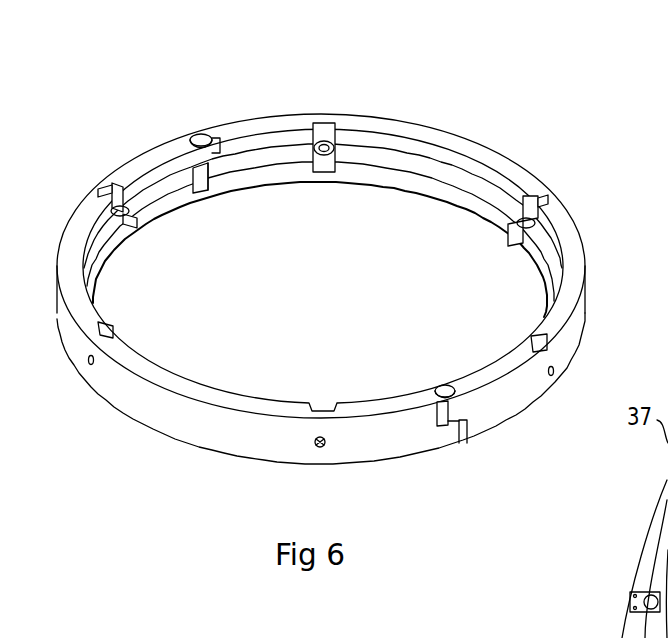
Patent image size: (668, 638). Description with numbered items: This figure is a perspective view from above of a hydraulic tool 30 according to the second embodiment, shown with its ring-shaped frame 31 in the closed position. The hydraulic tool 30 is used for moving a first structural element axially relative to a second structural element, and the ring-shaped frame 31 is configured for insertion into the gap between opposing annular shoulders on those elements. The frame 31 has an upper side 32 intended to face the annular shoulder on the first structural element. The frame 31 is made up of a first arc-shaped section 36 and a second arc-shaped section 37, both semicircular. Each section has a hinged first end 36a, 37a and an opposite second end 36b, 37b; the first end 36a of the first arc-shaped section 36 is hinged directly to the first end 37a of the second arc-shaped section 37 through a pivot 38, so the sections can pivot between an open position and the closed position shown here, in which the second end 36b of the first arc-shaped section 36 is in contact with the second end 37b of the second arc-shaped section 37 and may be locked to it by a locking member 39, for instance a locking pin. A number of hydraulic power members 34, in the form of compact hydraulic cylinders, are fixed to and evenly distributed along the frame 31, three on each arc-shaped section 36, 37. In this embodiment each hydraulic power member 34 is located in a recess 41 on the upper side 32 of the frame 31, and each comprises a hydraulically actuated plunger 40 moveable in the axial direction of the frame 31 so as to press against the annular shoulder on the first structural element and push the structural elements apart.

The hydraulic tool 30 is at (605, 174).
The ring-shaped frame 31 is at (521, 168).
The upper side 32 is at (566, 222).
The hydraulic power member 34 is at (327, 174).
The first arc-shaped section 36 is at (587, 269).
The first end of the first arc-shaped section 36a is at (237, 194).
The second end of the first arc-shaped section 36b is at (484, 444).
The second arc-shaped section 37 is at (129, 401).
The first end of the second arc-shaped section 37a is at (215, 208).
The second end of the second arc-shaped section 37b is at (464, 457).
The pivot 38 is at (201, 134).
The locking member 39 is at (447, 384).
The hydraulically actuated plunger 40 is at (337, 150).
The recess 41 is at (316, 170).